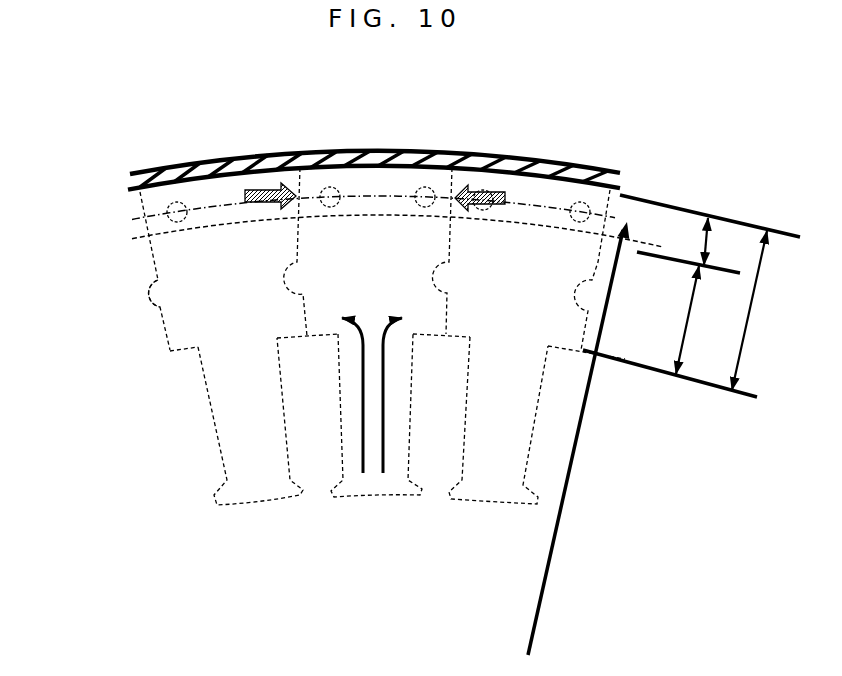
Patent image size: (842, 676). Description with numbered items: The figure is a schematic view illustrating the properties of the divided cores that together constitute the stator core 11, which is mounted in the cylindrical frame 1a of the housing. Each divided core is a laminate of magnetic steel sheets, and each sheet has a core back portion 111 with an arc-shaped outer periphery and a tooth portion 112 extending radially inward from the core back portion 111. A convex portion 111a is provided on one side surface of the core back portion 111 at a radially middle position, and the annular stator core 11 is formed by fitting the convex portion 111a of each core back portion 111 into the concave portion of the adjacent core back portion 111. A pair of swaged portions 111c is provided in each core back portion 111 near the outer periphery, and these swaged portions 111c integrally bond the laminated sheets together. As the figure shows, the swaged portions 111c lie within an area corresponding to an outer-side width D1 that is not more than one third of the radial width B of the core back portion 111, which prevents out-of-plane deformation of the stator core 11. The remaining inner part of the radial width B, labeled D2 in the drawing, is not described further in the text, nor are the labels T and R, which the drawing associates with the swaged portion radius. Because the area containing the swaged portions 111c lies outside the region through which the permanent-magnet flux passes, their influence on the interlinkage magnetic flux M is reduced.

The stator core 11 is at (176, 118).
The cylindrical frame 1a is at (153, 173).
The core back portion 111 is at (208, 309).
The convex portion 111a is at (153, 300).
The swaged portions 111c is at (425, 188).
The tooth portion 112 is at (242, 473).
The pressing direction / fastening T is at (483, 191).
The interlinkage magnetic flux M is at (368, 468).
The swaged portion radius R is at (578, 449).
The outer-side width D1 is at (703, 243).
The distance D2 is at (678, 353).
The radial width B is at (752, 310).